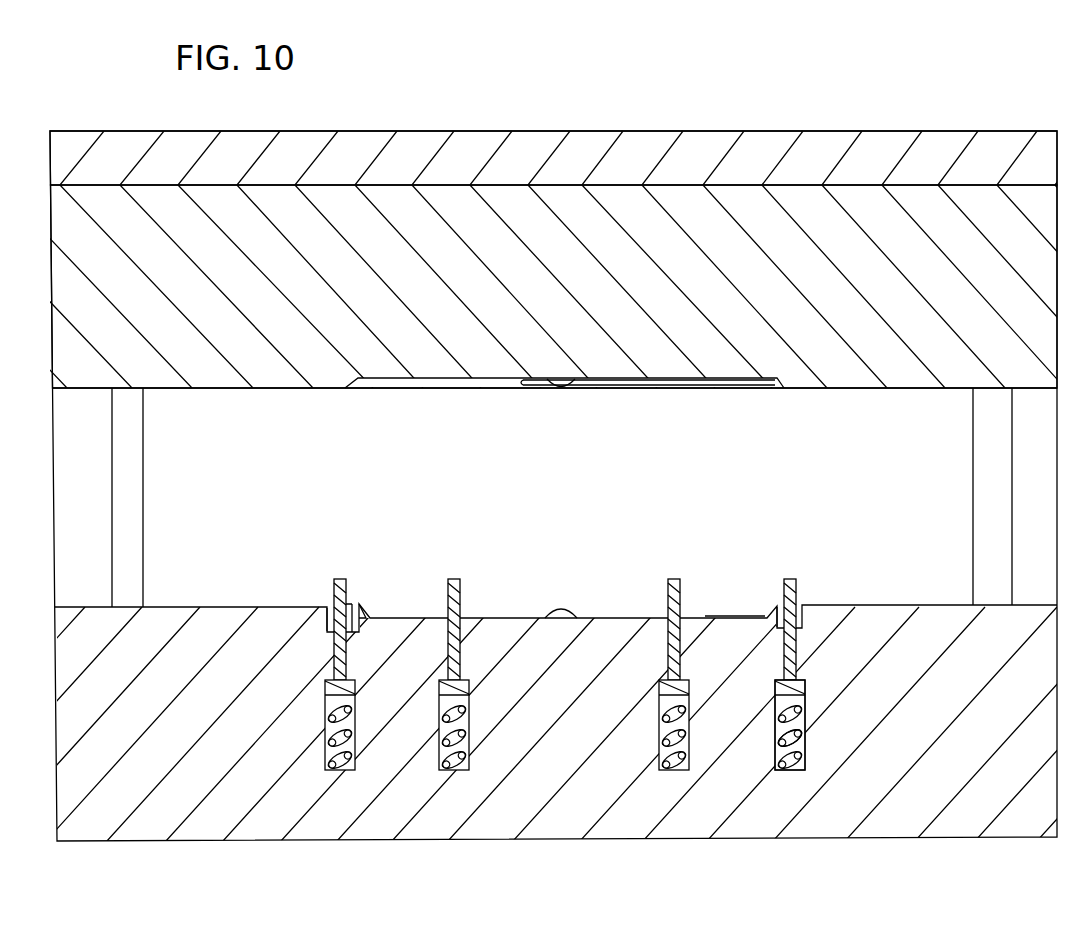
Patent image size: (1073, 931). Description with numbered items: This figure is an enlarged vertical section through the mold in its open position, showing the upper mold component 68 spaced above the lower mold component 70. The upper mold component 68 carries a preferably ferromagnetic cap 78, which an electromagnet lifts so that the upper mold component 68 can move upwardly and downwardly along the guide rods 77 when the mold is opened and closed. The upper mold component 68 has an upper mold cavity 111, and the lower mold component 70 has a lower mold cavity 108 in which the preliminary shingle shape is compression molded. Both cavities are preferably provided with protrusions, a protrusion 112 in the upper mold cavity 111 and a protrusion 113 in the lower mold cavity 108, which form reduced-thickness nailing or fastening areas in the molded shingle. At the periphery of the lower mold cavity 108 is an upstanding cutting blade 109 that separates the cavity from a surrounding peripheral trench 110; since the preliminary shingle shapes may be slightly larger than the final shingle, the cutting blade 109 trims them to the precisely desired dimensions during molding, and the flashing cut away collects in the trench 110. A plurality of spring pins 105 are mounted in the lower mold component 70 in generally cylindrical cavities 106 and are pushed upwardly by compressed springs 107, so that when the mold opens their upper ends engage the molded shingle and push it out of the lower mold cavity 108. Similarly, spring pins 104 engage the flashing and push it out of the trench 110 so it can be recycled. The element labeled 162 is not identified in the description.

The ferromagnetic cap 78 is at (733, 132).
The upper mold component 68 is at (913, 380).
The recess 162 is at (363, 380).
The upper mold cavity 111 is at (528, 380).
The protrusion 112 is at (566, 381).
The guide rods 77 is at (133, 500).
The lower mold component 70 is at (888, 608).
The spring pins 104 is at (352, 615).
The spring pins 105 is at (665, 582).
The lower mold cavity 108 is at (706, 600).
The cutting blade 109 is at (360, 606).
The trench 110 is at (353, 605).
The protrusion 113 is at (555, 612).
The cylindrical cavities 106 is at (803, 742).
The compressed springs 107 is at (786, 770).